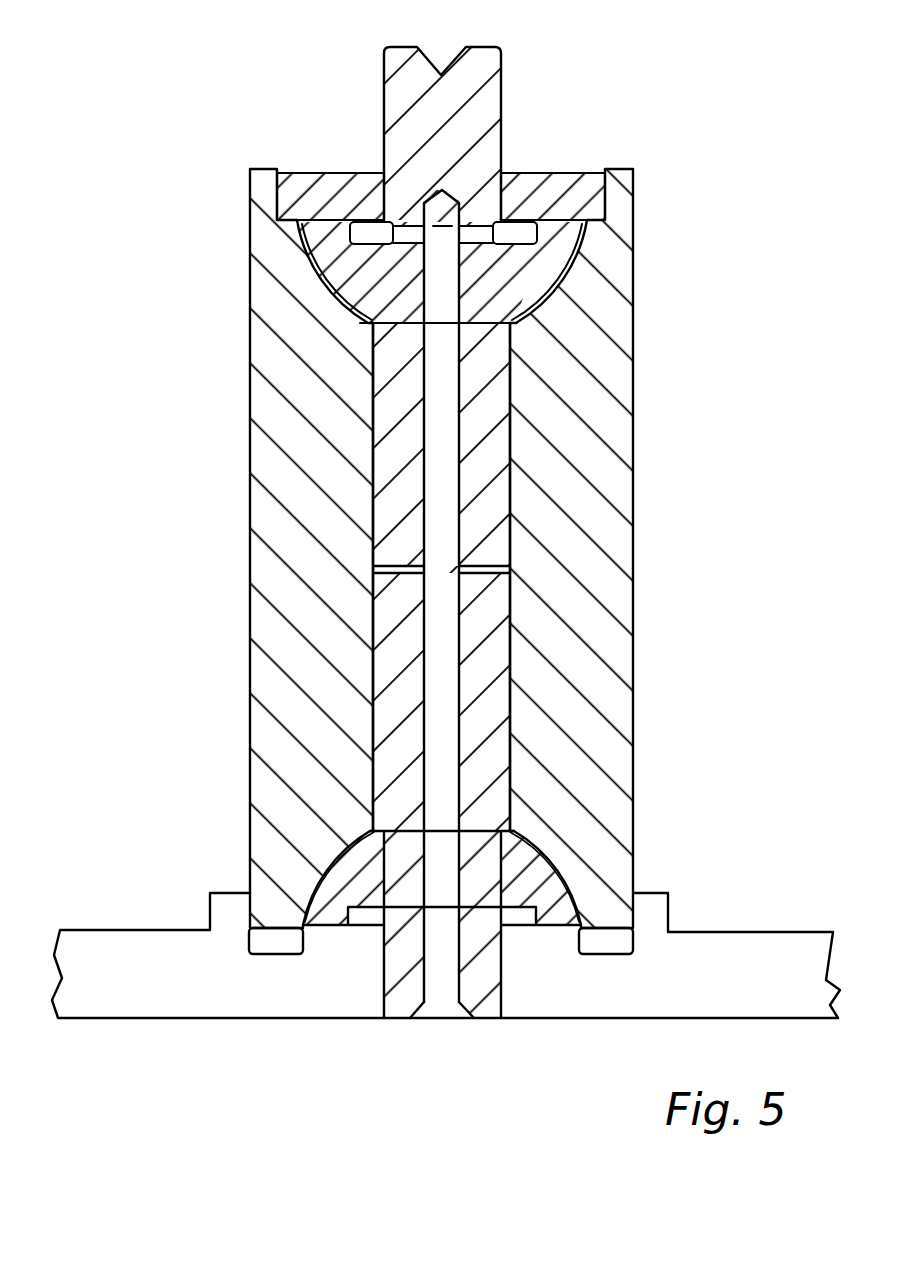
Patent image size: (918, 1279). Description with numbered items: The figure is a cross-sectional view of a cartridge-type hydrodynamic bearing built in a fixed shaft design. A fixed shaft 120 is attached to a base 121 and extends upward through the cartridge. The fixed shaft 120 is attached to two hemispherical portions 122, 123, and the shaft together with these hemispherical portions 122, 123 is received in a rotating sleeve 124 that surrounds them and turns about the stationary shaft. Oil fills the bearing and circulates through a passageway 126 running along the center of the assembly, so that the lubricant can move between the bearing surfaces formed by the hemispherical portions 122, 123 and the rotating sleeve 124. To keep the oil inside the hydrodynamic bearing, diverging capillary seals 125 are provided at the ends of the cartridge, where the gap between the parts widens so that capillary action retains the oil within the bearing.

The fixed shaft 120 is at (483, 58).
The base 121 is at (546, 1005).
The hemispherical portion 122 is at (553, 270).
The hemispherical portion 123 is at (318, 876).
The rotating sleeve 124 is at (615, 483).
The diverging capillary seal 125 is at (520, 210).
The passageway 126 is at (445, 633).